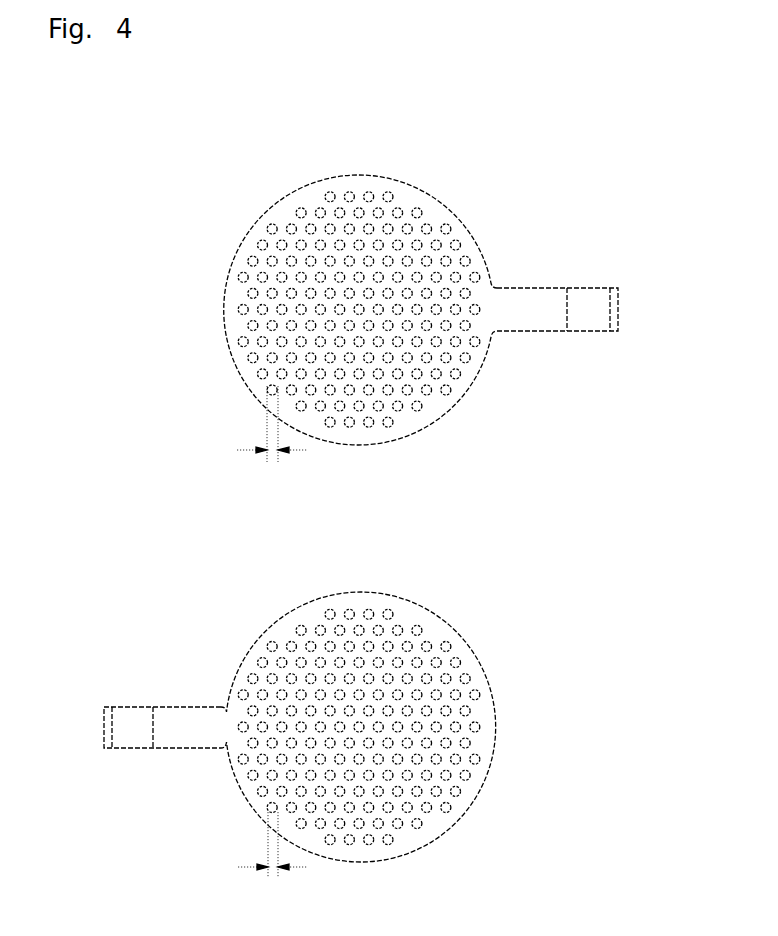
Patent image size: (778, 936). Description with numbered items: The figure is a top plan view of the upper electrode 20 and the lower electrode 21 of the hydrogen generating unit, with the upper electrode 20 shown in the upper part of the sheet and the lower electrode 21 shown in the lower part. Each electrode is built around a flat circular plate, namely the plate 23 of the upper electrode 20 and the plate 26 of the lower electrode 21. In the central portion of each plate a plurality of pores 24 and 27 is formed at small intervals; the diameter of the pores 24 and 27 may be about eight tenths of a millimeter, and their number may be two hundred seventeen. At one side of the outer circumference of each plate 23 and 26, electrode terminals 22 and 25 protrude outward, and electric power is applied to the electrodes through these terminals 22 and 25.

The upper electrode 20 is at (397, 281).
The lower electrode 21 is at (339, 718).
The electrode terminal 22 is at (587, 298).
The flat circular plate 23 is at (283, 212).
The pores 24 is at (255, 262).
The electrode terminal 25 is at (135, 723).
The flat circular plate 26 is at (483, 712).
The pores 27 is at (475, 758).